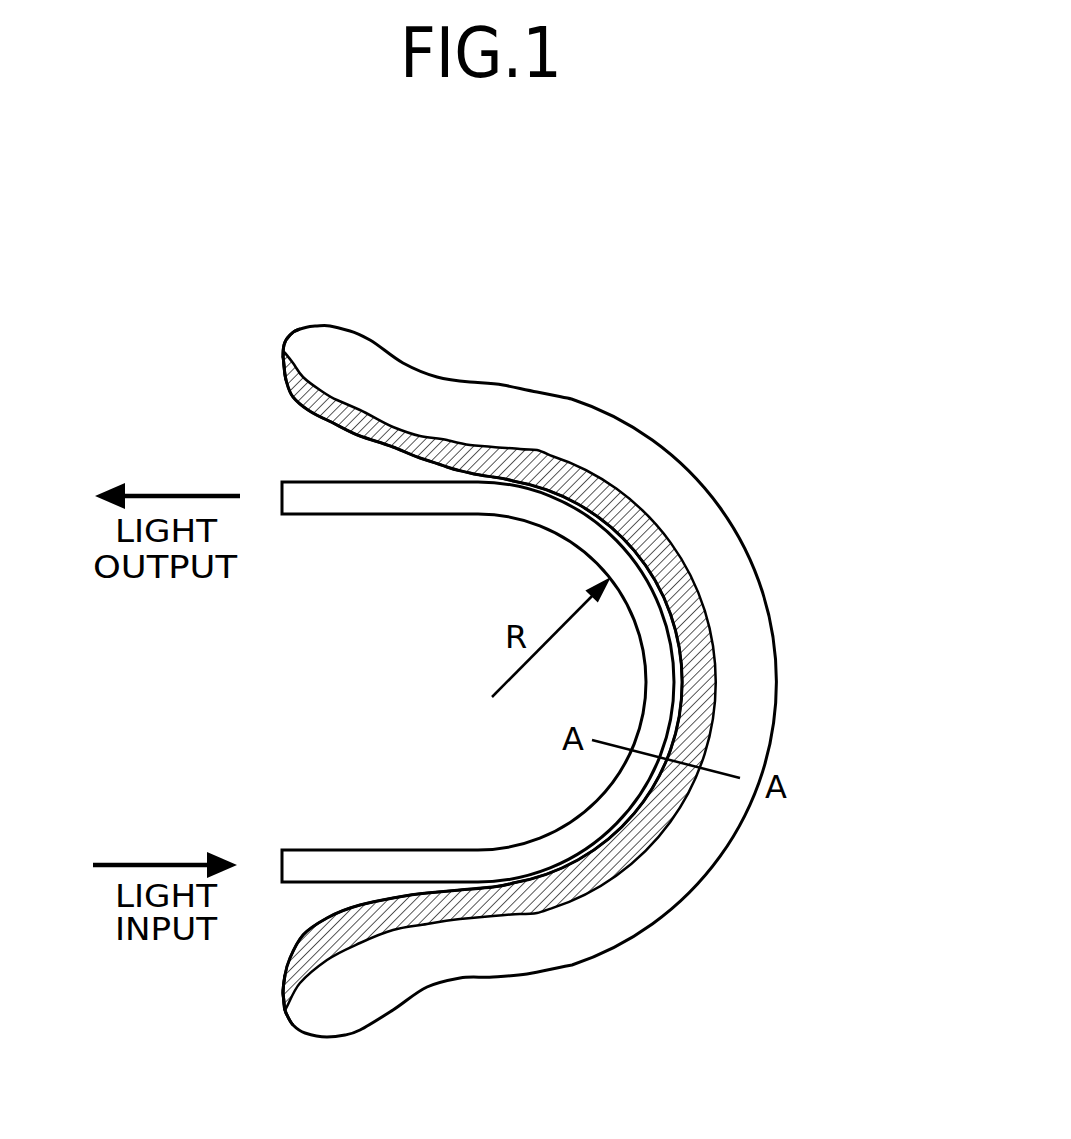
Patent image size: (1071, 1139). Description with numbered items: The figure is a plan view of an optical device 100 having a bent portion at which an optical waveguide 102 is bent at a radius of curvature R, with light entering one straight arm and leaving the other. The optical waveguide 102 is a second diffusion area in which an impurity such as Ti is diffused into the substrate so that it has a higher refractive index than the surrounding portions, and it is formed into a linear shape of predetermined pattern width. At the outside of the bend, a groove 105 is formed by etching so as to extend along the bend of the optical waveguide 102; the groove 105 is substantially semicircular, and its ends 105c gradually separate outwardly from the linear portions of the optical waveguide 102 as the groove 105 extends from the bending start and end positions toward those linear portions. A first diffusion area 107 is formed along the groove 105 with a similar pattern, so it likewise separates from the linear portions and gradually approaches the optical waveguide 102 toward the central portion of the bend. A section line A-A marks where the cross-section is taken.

The optical device 100 is at (807, 352).
The optical waveguide 102 is at (387, 862).
The groove 105 is at (775, 648).
The ends of the groove 105c is at (292, 338).
The first diffusion area 107 is at (572, 468).